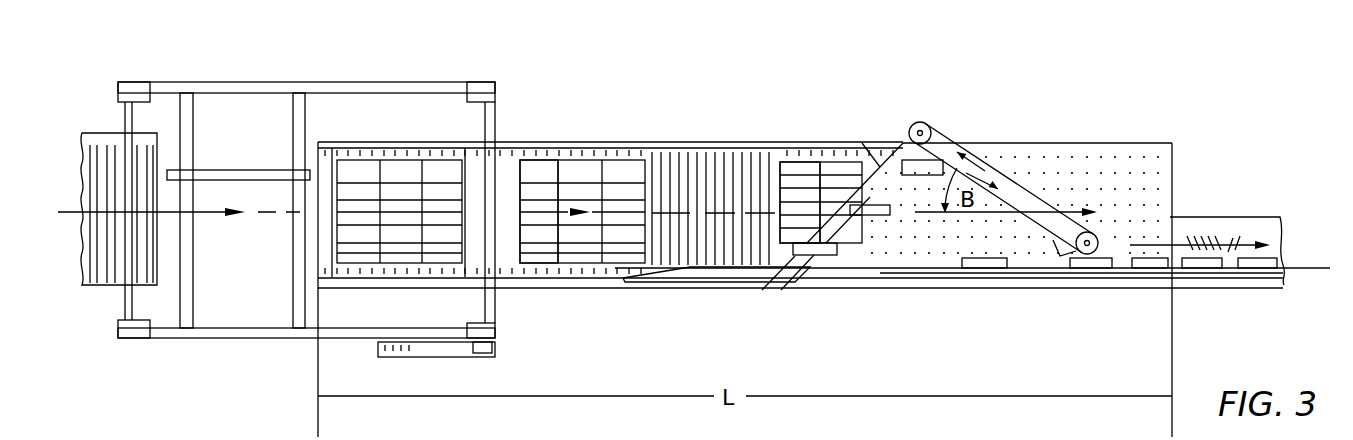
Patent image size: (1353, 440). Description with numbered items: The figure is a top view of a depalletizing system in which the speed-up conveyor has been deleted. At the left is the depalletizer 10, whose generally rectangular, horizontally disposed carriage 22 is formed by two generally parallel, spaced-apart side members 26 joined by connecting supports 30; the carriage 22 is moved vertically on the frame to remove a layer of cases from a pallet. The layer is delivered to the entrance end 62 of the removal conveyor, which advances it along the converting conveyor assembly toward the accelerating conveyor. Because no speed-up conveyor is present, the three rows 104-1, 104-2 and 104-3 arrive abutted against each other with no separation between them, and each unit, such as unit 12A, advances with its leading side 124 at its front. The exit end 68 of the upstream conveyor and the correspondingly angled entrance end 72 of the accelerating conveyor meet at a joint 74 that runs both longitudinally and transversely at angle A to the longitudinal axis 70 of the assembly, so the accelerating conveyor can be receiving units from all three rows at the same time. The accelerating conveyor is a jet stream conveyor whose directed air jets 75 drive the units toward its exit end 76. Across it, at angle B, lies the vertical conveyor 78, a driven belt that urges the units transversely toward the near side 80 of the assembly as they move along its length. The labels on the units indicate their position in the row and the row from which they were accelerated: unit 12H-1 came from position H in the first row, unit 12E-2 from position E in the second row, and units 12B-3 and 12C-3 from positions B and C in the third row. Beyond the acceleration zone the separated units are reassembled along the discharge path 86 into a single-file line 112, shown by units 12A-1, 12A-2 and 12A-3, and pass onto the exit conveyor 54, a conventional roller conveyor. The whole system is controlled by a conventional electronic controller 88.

The depalletizer 10 is at (513, 106).
The carriage 22 is at (347, 74).
The side members 26 is at (230, 82).
The connecting supports 30 is at (193, 106).
The entrance end 62 is at (320, 148).
The row 104-1 is at (617, 170).
The row 104-2 is at (577, 167).
The row 104-3 is at (543, 157).
The unit 12A is at (614, 258).
The leading side 124 is at (462, 255).
The unit 12C-3 is at (788, 232).
The unit 12B-3 is at (812, 256).
The unit 12E-2 is at (863, 217).
The entrance end 72 is at (867, 160).
The exit end 68 is at (878, 142).
The joint 74 is at (903, 143).
The unit 12H-1 is at (930, 165).
The vertical conveyor 78 is at (955, 142).
The longitudinal axis 70 is at (1000, 200).
The exit end 76 is at (1172, 178).
The directed jets 75 is at (942, 250).
The exit conveyor 54 is at (1220, 215).
The discharge path 86 is at (1300, 266).
The line 112 is at (1108, 268).
The unit 12A-1 is at (1053, 245).
The unit 12A-2 is at (1080, 262).
The unit 12A-3 is at (983, 262).
The near side 80 is at (1037, 288).
The controller 88 is at (463, 358).